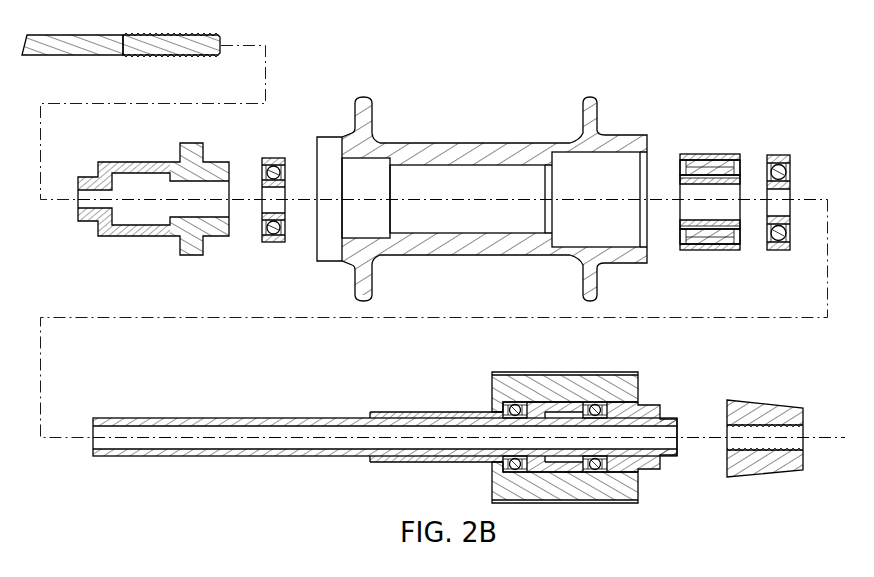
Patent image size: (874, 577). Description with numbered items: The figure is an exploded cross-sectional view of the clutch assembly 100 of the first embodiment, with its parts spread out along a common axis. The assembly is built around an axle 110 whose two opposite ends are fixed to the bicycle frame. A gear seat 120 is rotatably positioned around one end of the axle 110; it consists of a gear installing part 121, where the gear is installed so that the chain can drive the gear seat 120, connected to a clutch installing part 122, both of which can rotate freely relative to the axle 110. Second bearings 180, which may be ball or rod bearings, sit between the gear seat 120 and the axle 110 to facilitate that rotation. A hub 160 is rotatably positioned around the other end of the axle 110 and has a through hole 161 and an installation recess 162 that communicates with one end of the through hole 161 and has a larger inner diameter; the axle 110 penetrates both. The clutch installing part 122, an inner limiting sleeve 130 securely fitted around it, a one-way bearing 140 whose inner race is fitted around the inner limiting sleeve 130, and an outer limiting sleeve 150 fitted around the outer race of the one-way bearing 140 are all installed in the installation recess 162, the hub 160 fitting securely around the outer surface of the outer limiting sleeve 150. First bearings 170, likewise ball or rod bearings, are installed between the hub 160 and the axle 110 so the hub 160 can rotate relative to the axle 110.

The clutch assembly 100 is at (470, 50).
The axle 110 is at (656, 397).
The gear seat 120 is at (618, 362).
The gear installing part 121 is at (566, 504).
The clutch installing part 122 is at (432, 463).
The inner limiting sleeve 130 is at (678, 226).
The one-way bearing 140 is at (727, 251).
The outer limiting sleeve 150 is at (706, 251).
The hub 160 is at (492, 132).
The through hole 161 is at (472, 188).
The installation recess 162 is at (597, 183).
The first bearings 170 is at (276, 243).
The second bearings 180 is at (514, 400).